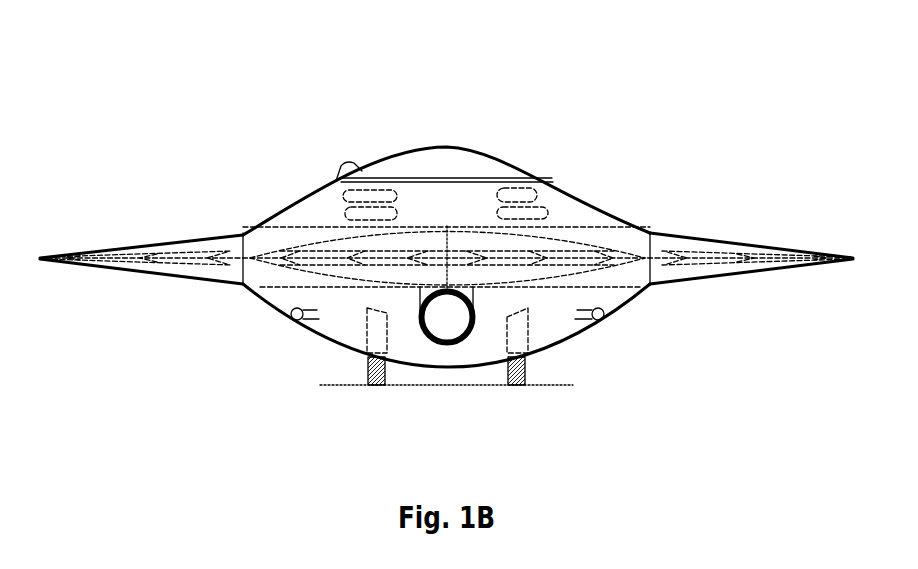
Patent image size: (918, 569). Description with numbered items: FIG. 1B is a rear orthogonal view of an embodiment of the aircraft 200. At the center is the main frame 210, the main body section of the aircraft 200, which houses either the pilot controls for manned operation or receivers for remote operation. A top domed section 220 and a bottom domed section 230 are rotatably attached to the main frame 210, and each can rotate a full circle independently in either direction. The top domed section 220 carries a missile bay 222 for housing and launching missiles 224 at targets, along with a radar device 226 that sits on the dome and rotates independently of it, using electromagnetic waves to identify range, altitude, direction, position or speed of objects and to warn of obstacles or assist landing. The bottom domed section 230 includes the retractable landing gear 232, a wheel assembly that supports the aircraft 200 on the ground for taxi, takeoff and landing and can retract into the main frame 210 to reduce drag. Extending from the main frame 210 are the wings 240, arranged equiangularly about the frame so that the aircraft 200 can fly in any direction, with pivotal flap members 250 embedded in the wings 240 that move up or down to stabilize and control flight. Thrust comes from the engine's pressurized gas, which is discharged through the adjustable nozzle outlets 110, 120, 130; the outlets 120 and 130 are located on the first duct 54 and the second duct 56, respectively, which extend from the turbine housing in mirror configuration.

The aircraft 200 is at (247, 120).
The main frame 210 is at (623, 243).
The top domed section 220 is at (487, 149).
The missile bay 222 is at (287, 213).
The missiles 224 is at (541, 213).
The radar device 226 is at (338, 164).
The bottom domed section 230 is at (350, 341).
The retractable landing gear 232 is at (527, 375).
The wings 240 is at (167, 243).
The pivotal flap members 250 is at (787, 250).
The nozzle/outlet 110 is at (550, 328).
The nozzle/outlet 120 is at (607, 313).
The nozzle/outlet 130 is at (291, 313).
The first duct 54 is at (292, 321).
The second duct 56 is at (583, 322).